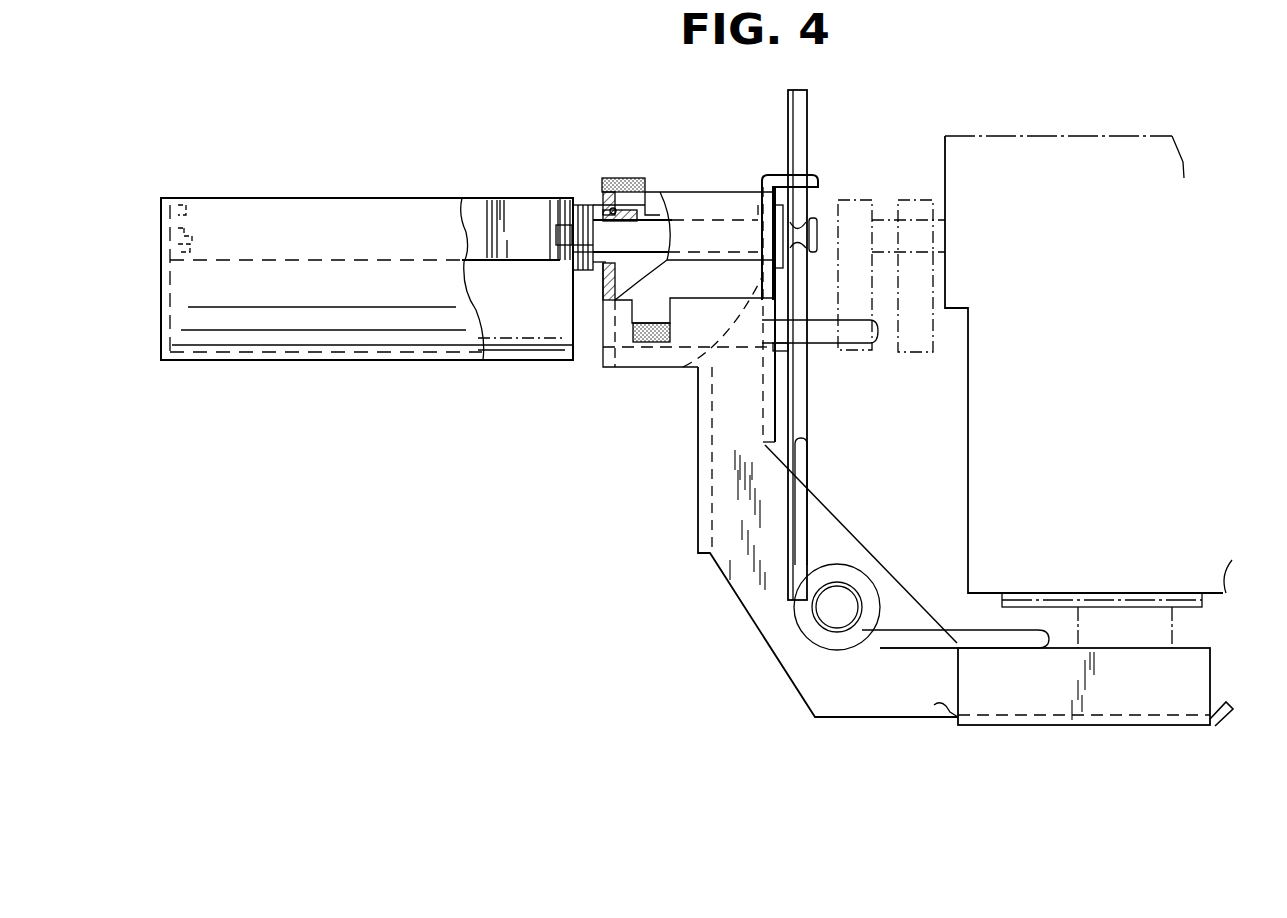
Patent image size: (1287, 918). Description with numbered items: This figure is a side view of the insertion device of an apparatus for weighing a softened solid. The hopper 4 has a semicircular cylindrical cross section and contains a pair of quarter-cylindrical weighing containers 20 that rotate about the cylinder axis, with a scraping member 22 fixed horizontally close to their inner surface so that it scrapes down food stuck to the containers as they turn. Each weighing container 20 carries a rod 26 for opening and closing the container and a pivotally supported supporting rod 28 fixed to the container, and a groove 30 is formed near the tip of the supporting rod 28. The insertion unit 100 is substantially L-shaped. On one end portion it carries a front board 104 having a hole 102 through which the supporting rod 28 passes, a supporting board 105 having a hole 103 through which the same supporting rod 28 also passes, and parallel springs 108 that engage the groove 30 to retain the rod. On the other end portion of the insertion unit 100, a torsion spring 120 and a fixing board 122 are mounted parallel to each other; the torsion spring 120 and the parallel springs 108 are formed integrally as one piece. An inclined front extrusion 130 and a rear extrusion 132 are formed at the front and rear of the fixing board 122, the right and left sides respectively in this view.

The hopper 4 is at (367, 220).
The weighing container 20 is at (283, 197).
The scraping member 22 is at (548, 210).
The rod 26 is at (823, 352).
The supporting rod 28 is at (669, 205).
The groove 30 is at (800, 222).
The insertion unit 100 is at (747, 633).
The hole 102 is at (612, 200).
The hole 103 is at (748, 215).
The front board 104 is at (603, 345).
The supporting board 105 is at (688, 355).
The parallel spring 108 is at (805, 112).
The torsion spring 120 is at (1023, 640).
The fixing board 122 is at (1122, 724).
The front extrusion 130 is at (947, 718).
The rear extrusion 132 is at (1228, 718).